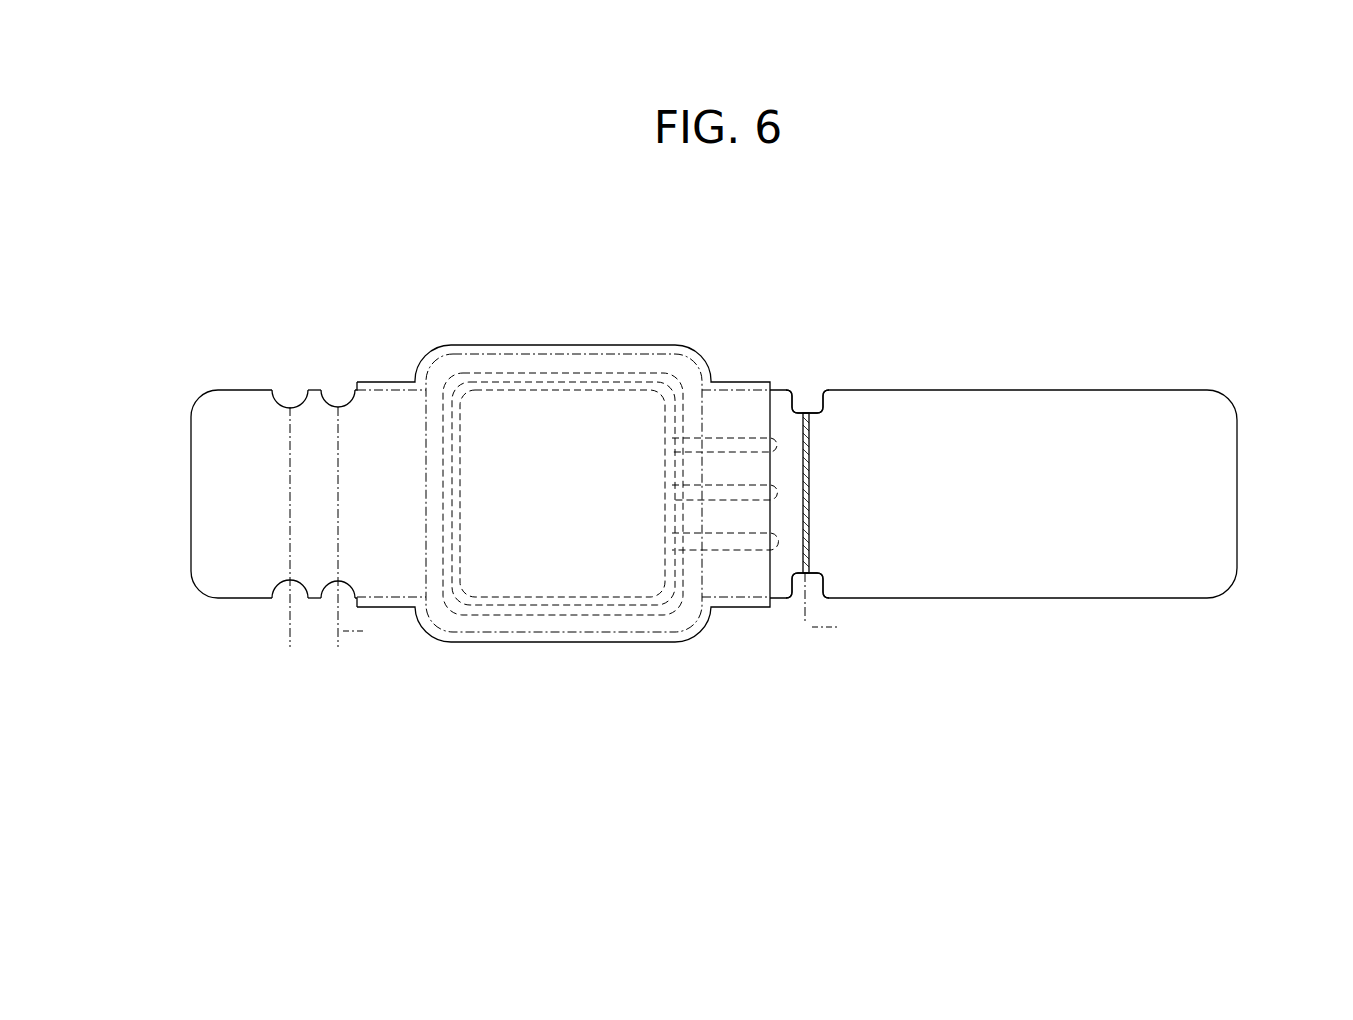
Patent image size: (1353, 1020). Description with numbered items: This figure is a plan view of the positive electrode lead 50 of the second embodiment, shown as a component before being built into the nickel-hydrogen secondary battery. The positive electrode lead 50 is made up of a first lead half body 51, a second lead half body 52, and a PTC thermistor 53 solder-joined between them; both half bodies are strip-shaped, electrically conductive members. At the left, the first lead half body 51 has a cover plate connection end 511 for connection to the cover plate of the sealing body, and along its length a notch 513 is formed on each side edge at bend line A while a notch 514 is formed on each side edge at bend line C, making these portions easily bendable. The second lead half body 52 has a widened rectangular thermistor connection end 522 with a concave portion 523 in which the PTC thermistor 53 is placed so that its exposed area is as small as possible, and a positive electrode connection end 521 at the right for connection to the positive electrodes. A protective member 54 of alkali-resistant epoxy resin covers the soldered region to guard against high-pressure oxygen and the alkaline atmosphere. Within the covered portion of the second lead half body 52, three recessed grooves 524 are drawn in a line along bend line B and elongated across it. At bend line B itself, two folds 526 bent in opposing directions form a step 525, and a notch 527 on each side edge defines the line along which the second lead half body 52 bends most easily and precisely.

The positive electrode lead 50 is at (939, 303).
The first lead half body 51 is at (231, 408).
The cover plate connection end 511 is at (232, 496).
The notch 513 is at (338, 406).
The notch 514 is at (291, 406).
The second lead half body 52 is at (1042, 427).
The positive electrode connection end 521 is at (1210, 498).
The thermistor connection end 522 is at (557, 633).
The concave portion 523 is at (588, 381).
The recessed grooves 524 is at (730, 549).
The step 525 is at (816, 525).
The folds 526 is at (812, 467).
The notch 527 is at (806, 398).
The PTC thermistor 53 is at (525, 415).
The protective member 54 is at (479, 643).